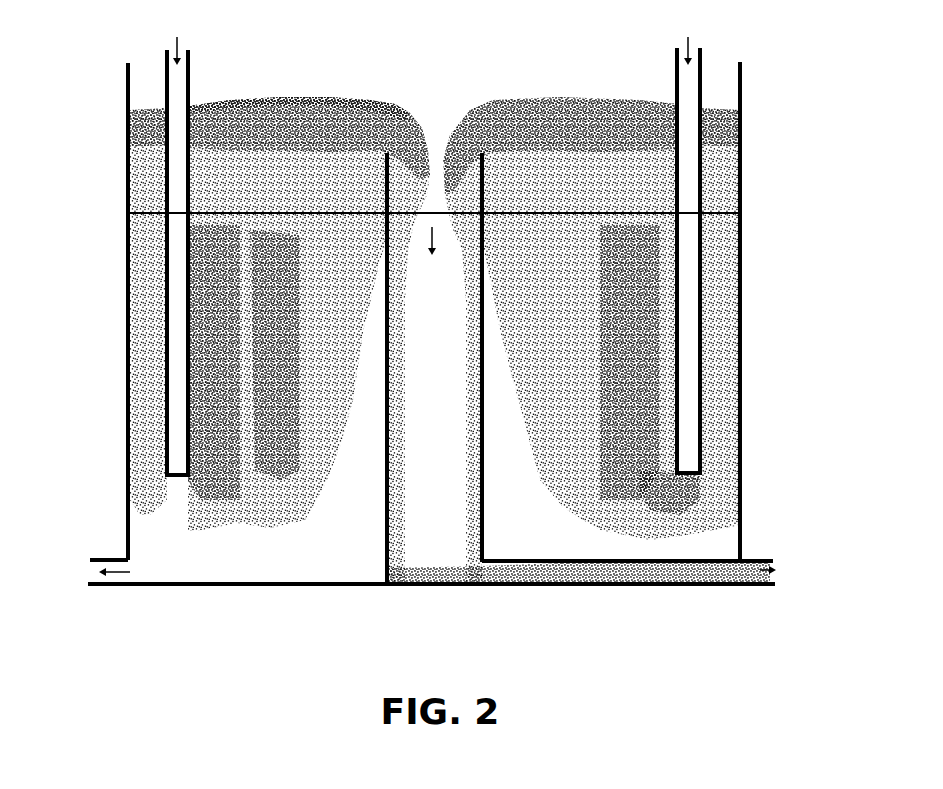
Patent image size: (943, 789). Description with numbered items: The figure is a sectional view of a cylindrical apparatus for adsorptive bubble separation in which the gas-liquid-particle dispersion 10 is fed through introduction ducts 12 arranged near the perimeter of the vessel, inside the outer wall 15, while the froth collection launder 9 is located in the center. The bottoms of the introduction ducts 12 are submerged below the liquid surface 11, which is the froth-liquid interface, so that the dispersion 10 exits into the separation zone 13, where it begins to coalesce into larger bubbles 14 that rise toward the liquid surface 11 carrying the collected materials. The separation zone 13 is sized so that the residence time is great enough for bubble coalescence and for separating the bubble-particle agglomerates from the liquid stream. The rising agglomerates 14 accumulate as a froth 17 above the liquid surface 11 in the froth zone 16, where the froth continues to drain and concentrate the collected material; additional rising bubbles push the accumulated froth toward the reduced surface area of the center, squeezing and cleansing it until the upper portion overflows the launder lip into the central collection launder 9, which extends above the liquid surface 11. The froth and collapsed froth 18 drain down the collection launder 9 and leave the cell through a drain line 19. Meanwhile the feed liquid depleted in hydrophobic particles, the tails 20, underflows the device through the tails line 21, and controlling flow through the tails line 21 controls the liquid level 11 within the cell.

The froth collection launder 9 is at (475, 128).
The gas-liquid-particle dispersion 10 is at (688, 477).
The liquid surface 11 is at (740, 213).
The introduction ducts 12 is at (165, 63).
The separation zone 13 is at (272, 378).
The bubbles 14 is at (742, 448).
The outer wall 15 is at (743, 375).
The froth zone 16 is at (277, 153).
The froth 17 is at (362, 105).
The collapsed froth 18 is at (752, 585).
The drain line 19 is at (710, 560).
The tails 20 is at (118, 572).
The tails line 21 is at (112, 587).